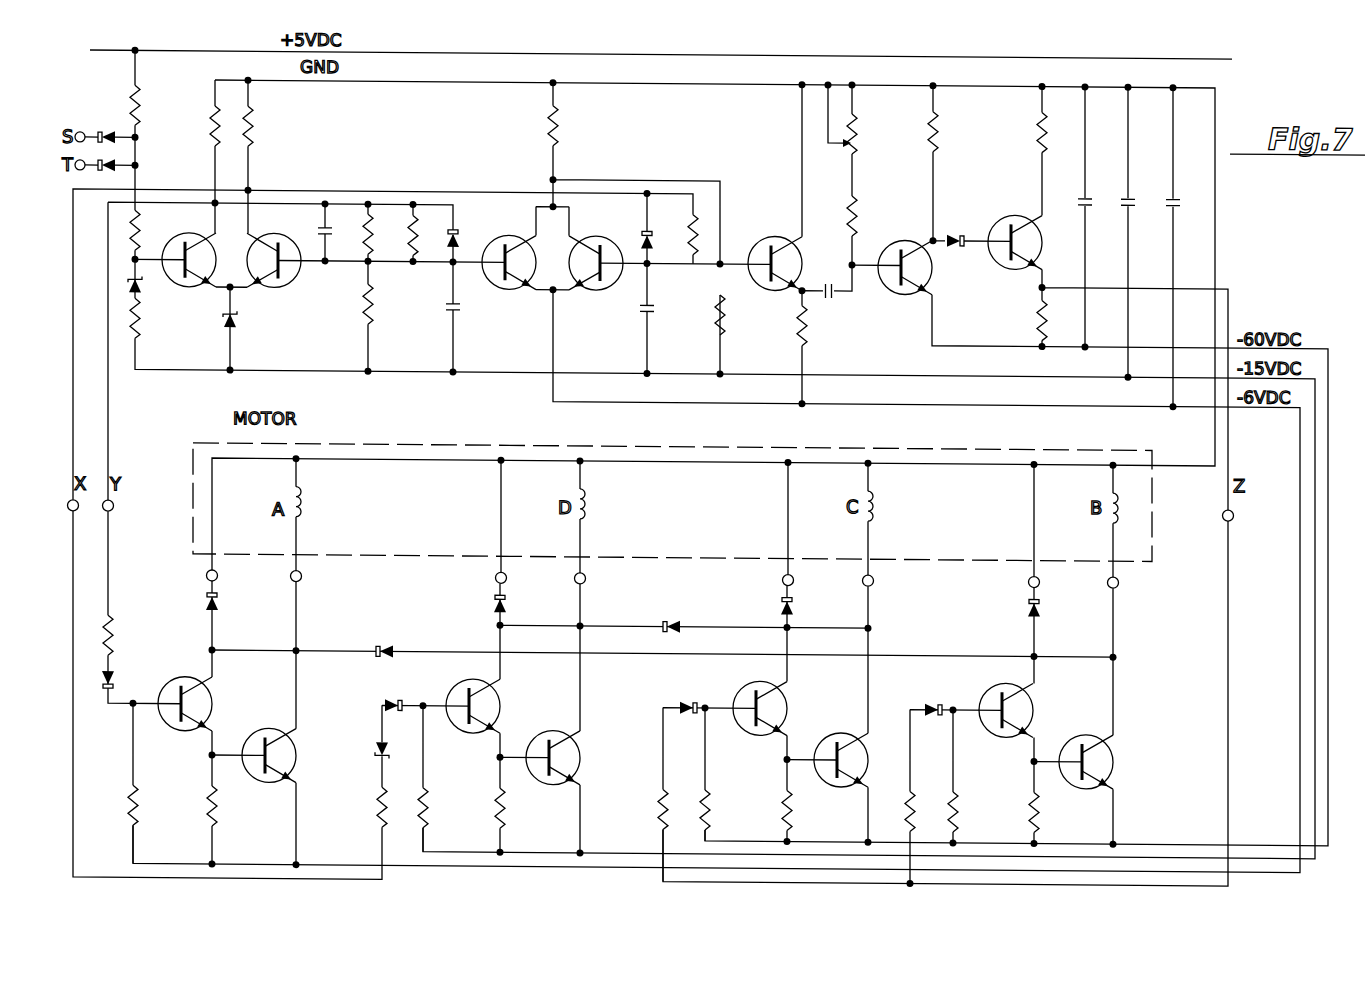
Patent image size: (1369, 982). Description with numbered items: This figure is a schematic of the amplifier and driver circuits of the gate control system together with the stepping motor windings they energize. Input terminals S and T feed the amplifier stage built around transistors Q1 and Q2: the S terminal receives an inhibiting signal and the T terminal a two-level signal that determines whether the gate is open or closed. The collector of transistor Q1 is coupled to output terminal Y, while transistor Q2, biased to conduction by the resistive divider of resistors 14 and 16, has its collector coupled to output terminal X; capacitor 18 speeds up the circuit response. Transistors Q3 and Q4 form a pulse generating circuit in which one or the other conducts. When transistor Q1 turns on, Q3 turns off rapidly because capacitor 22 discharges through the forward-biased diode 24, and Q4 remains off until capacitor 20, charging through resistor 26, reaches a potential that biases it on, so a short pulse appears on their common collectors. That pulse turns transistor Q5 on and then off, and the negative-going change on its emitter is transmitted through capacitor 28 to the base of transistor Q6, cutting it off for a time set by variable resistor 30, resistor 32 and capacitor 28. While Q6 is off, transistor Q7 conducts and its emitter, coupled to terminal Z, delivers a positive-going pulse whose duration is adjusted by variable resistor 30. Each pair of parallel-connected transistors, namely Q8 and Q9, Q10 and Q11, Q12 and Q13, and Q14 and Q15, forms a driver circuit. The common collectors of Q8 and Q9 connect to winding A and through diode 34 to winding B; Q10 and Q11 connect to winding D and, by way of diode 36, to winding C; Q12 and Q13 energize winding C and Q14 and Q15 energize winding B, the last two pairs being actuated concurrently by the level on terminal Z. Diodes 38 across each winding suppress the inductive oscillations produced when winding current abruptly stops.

The resistor 14 is at (381, 244).
The resistor 16 is at (362, 316).
The capacitor 18 is at (318, 235).
The capacitor 20 is at (653, 305).
The capacitor 22 is at (449, 306).
The diode 24 is at (462, 235).
The resistor 26 is at (651, 237).
The capacitor 28 is at (830, 290).
The variable resistor 30 is at (858, 131).
The resistor 32 is at (860, 206).
The diode 34 is at (385, 642).
The diode 36 is at (671, 612).
The diode 38 is at (219, 604).
The transistor Q1 is at (178, 287).
The transistor Q2 is at (279, 287).
The transistor Q3 is at (507, 284).
The transistor Q4 is at (596, 283).
The transistor Q5 is at (764, 231).
The transistor Q6 is at (898, 288).
The transistor Q7 is at (1005, 262).
The driver transistor Q8 is at (213, 703).
The driver transistor Q9 is at (250, 781).
The driver transistor Q10 is at (500, 706).
The driver transistor Q11 is at (540, 781).
The driver transistor Q12 is at (788, 704).
The driver transistor Q13 is at (830, 781).
The driver transistor Q14 is at (1034, 702).
The driver transistor Q15 is at (1075, 781).